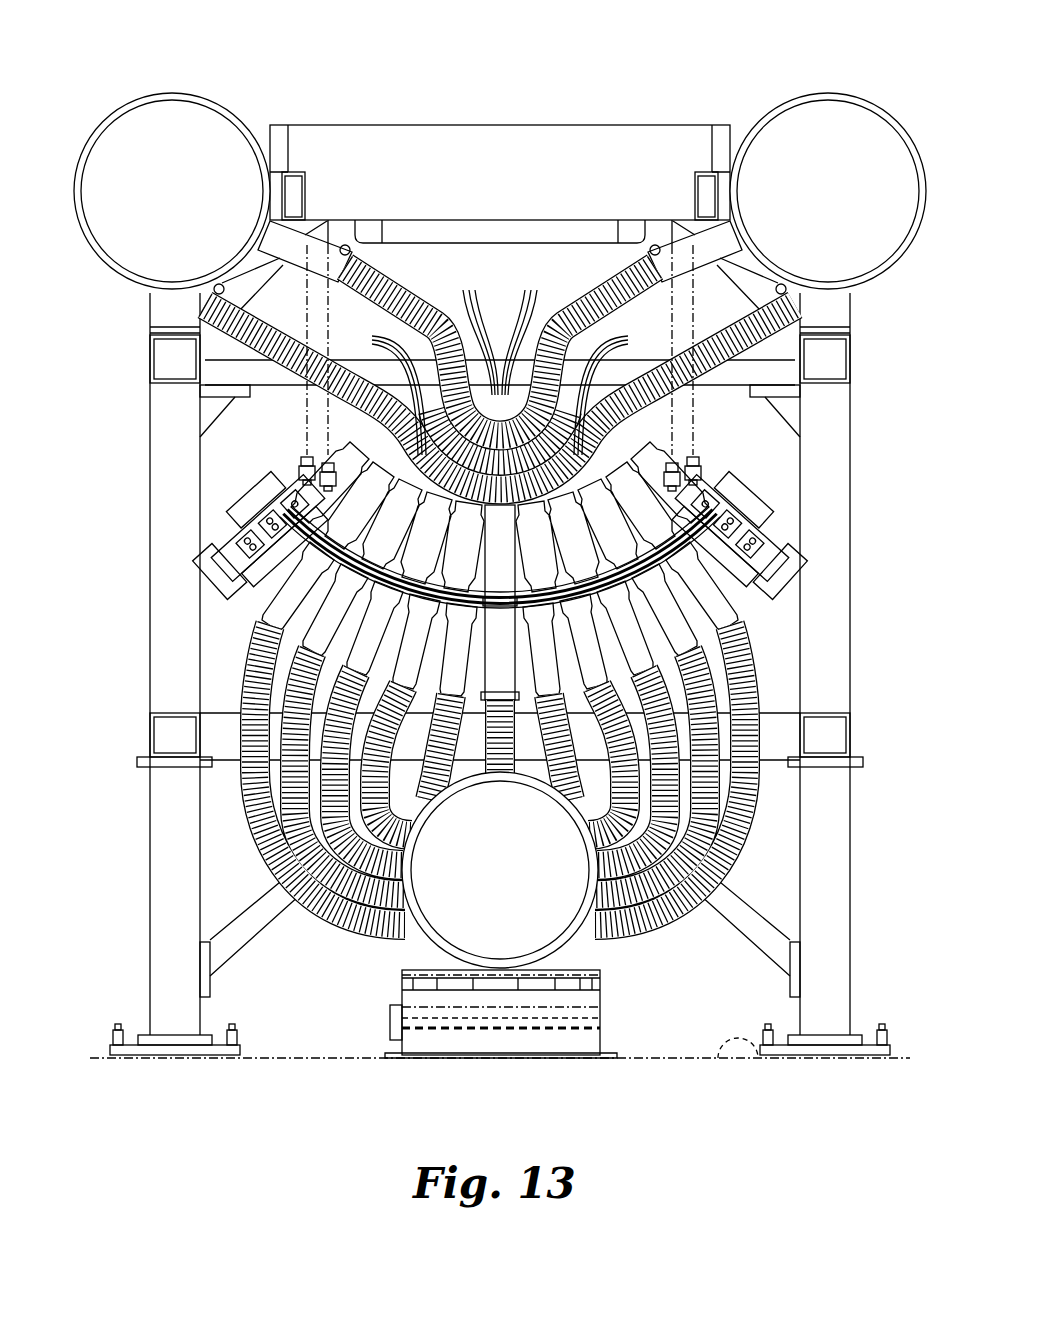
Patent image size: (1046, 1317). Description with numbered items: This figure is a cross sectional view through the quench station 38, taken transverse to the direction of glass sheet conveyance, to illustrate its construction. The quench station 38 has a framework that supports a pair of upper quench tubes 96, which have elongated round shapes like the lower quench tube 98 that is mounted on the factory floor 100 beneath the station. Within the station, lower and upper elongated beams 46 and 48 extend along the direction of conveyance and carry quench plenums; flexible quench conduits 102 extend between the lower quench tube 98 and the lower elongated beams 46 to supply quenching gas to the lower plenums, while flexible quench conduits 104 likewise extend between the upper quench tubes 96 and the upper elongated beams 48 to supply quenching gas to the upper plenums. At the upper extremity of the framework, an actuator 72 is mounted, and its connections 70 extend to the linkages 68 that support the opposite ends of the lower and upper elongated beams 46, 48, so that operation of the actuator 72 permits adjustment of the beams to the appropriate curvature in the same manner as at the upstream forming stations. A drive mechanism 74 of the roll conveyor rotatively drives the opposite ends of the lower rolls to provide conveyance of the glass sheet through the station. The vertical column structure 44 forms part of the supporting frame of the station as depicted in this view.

The quench station 38 is at (708, 66).
The support frame 44 is at (858, 545).
The lower elongated beams 46 is at (302, 606).
The upper elongated beams 48 is at (625, 480).
The linkages 68 is at (377, 483).
The connections 70 is at (335, 400).
The actuator 72 is at (532, 138).
The drive mechanism 74 is at (220, 524).
The upper quench tubes 96 is at (122, 288).
The lower quench tube 98 is at (588, 945).
The factory floor 100 is at (745, 1052).
The flexible quench conduits 102 is at (336, 856).
The flexible quench conduits 104 is at (626, 336).